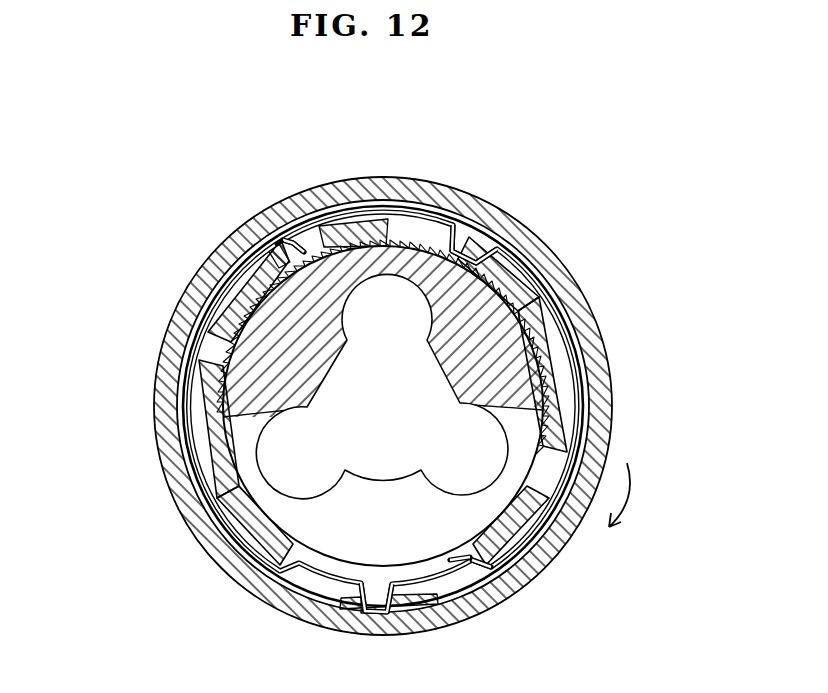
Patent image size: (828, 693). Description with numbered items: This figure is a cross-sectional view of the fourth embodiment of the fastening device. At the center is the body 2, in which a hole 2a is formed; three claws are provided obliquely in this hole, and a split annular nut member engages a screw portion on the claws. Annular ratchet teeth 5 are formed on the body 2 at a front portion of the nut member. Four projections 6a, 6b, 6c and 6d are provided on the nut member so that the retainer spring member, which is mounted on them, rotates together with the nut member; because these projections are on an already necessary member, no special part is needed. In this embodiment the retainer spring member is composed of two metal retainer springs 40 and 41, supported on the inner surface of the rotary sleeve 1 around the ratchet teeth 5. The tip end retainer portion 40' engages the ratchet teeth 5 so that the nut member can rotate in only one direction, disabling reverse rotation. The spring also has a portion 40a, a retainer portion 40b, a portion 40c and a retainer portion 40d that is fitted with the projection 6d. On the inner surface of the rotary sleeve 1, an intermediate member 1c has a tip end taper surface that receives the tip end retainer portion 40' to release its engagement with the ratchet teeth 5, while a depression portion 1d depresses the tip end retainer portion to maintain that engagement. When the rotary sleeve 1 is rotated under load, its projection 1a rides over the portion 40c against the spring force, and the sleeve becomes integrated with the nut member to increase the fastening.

The rotary sleeve 1 is at (590, 307).
The projection 1a is at (408, 597).
The intermediate member 1c is at (378, 222).
The depression portion 1d is at (316, 236).
The body 2 is at (388, 403).
The hole 2a is at (352, 330).
The ratchet teeth 5 is at (233, 340).
The projection 6a is at (534, 267).
The projection 6b is at (514, 547).
The projection 6c is at (231, 552).
The projection 6d is at (212, 271).
The retainer spring 40 is at (373, 405).
The portion 40a is at (470, 235).
The retainer portion 40b is at (483, 567).
The portion 40c is at (363, 598).
The retainer portion 40d is at (272, 228).
The tip end retainer portion 40' is at (291, 190).
The retainer spring 41 is at (168, 371).